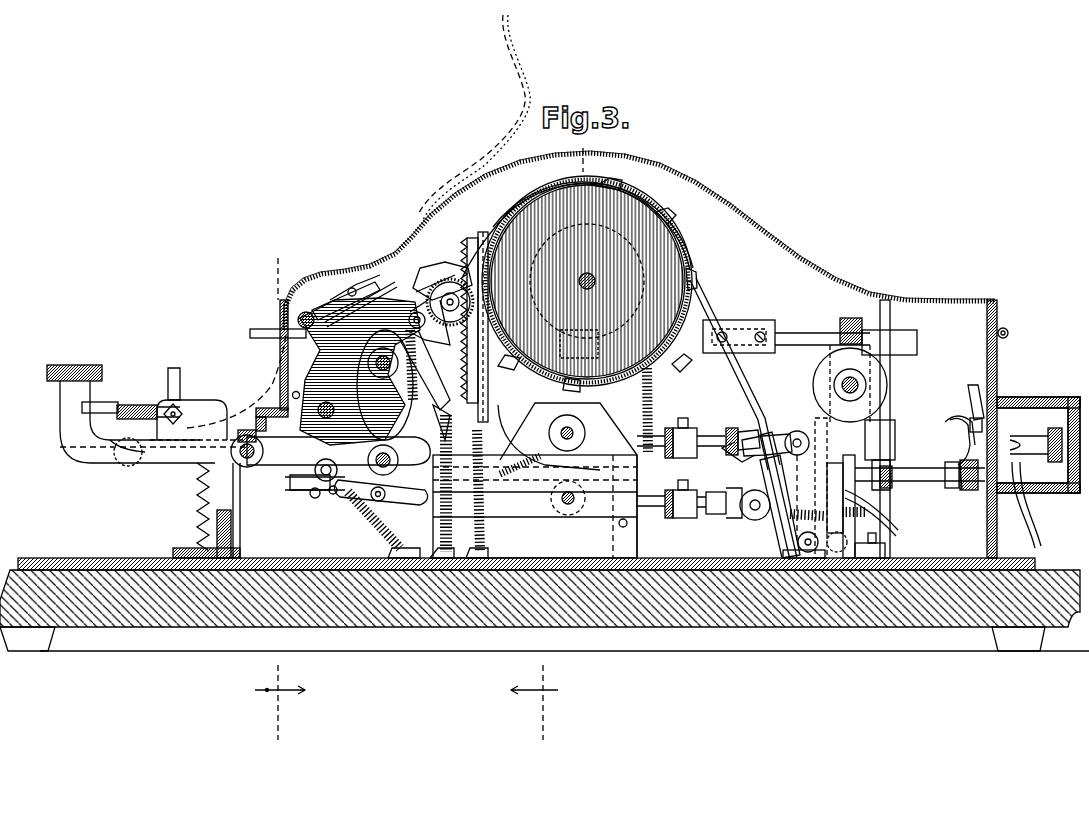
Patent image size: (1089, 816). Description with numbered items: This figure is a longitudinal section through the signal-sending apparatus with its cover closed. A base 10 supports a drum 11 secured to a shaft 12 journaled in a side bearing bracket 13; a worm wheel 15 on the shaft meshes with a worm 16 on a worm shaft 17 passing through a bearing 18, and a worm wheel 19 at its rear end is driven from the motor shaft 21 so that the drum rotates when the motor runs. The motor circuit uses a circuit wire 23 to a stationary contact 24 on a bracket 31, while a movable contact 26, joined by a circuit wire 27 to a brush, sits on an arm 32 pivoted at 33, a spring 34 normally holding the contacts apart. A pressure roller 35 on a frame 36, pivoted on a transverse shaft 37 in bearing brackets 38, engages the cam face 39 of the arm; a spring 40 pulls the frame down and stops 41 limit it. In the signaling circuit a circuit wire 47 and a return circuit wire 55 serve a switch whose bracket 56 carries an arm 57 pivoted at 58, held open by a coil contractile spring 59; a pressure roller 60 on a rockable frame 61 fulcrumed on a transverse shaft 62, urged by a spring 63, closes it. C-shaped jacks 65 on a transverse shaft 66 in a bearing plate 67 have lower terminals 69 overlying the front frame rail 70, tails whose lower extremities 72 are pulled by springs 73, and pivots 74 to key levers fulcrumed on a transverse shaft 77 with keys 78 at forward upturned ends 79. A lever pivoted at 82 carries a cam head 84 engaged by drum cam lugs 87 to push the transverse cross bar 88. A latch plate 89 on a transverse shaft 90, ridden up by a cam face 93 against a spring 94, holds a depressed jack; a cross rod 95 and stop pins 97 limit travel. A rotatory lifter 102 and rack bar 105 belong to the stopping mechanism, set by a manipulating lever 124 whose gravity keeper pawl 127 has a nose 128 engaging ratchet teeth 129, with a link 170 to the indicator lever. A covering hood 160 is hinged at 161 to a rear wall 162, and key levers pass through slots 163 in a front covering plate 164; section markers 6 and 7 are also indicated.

The section line 6- 6 is at (280, 499).
The section line 7- 7 is at (590, 152).
The base 10 is at (628, 627).
The drum 11 is at (690, 255).
The shaft 12 is at (600, 285).
The side bearing bracket 13 is at (710, 310).
The worm wheel 15 is at (656, 205).
The worm 16 is at (545, 375).
The worm shaft 17 is at (800, 330).
The bearing 18 is at (750, 310).
The worm wheel 19 is at (852, 318).
The motor shaft 21 is at (860, 385).
The circuit wire 23 is at (900, 520).
The stationary contact 24 is at (835, 462).
The movable contact 26 is at (797, 430).
The circuit wire 27 is at (722, 432).
The bracket 31 is at (882, 458).
The arm 32 is at (775, 530).
The pivot 33 is at (808, 552).
The spring 34 is at (790, 558).
The pressure roller 35 is at (745, 518).
The frame 36 is at (535, 492).
The transverse shaft 37 is at (565, 505).
The bearing bracket 38 is at (640, 550).
The cam face 39 is at (705, 520).
The spring 40 is at (482, 528).
The stop 41 is at (628, 523).
The circuit wire 47 is at (948, 418).
The return circuit wire 55 is at (965, 375).
The bracket 56 is at (895, 468).
The arm 57 is at (895, 430).
The pivot 58 is at (835, 552).
The coil contractile spring 59 is at (880, 540).
The pressure roller 60 is at (765, 432).
The rockable frame 61 is at (655, 412).
The transverse shaft 62 is at (572, 428).
The spring 63 is at (505, 553).
The jack 65 is at (345, 435).
The transverse shaft 66 is at (385, 478).
The bearing plate 67 is at (272, 378).
The lower terminal 69 is at (412, 420).
The front frame rail 70 is at (452, 500).
The lower extremity 72 is at (350, 500).
The spring 73 is at (362, 540).
The pivot 74 is at (325, 490).
The transverse shaft 77 is at (258, 445).
The key 78 is at (72, 365).
The forward upturned end 79 is at (160, 470).
The pivot 82 is at (428, 330).
The cam head 84 is at (447, 262).
The cam lug 87 is at (615, 180).
The transverse cross bar 88 is at (530, 405).
The latch plate 89 is at (336, 300).
The transverse shaft 90 is at (296, 318).
The cam face 93 is at (380, 288).
The spring 94 is at (430, 570).
The cross rod 95 is at (380, 378).
The stop pin 97 is at (355, 287).
The rotatory lifter 102 is at (470, 240).
The rack bar 105 is at (490, 228).
The manipulating lever 124 is at (290, 490).
The gravity keeper pawl 127 is at (190, 400).
The nose 128 is at (200, 470).
The ratchet teeth 129 is at (215, 505).
The covering hood 160 is at (770, 250).
The hinge 161 is at (1010, 330).
The rear wall 162 is at (1000, 548).
The slot 163 is at (240, 510).
The front covering plate 164 is at (244, 430).
The link 170 is at (350, 515).